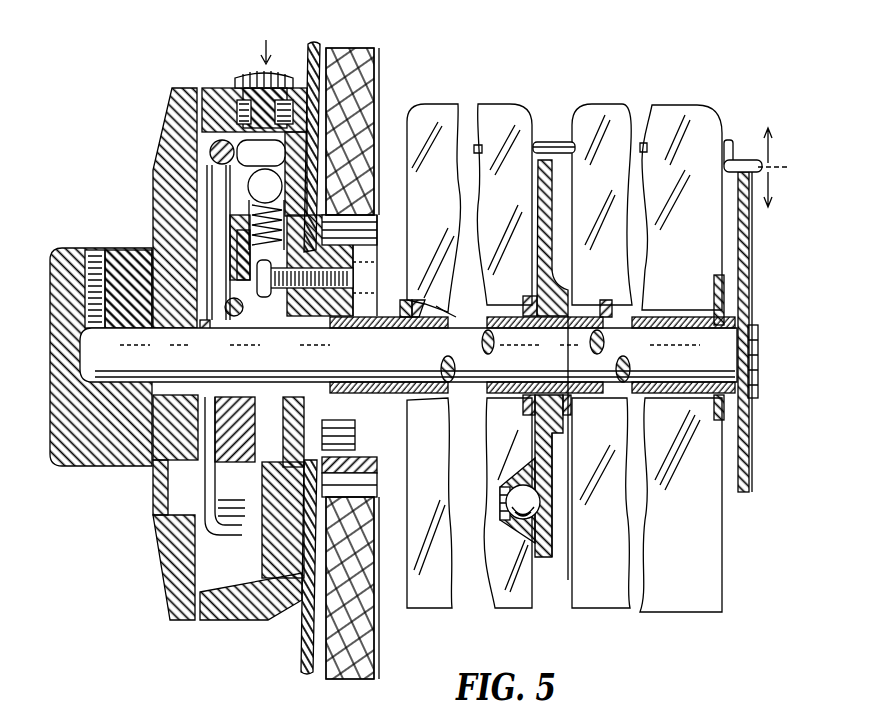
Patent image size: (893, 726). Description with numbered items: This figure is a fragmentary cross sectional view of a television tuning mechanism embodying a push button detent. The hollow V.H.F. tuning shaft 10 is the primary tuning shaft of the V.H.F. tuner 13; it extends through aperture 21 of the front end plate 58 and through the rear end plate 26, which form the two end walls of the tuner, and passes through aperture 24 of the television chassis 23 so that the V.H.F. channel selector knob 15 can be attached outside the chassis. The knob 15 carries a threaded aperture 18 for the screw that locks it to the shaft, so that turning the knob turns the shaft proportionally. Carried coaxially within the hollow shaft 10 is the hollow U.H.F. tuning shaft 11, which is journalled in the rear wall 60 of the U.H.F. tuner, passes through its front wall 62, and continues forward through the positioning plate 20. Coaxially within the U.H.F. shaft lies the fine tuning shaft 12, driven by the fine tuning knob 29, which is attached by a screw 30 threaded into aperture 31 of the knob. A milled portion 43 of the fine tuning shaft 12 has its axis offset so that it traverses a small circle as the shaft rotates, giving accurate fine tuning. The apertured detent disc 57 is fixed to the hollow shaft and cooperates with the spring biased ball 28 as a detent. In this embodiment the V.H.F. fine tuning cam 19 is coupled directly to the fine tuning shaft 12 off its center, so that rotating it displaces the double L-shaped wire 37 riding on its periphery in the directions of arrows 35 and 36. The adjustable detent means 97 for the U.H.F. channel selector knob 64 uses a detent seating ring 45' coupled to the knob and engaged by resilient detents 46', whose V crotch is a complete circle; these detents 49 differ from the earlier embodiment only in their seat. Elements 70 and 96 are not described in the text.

The hollow V.H.F. tuning shaft 10 is at (452, 322).
The hollow U.H.F. tuning shaft 11 is at (590, 314).
The fine tuning shaft 12 is at (444, 343).
The V.H.F. tuner 13 is at (498, 584).
The V.H.F. channel selector knob 15 is at (243, 612).
The threaded aperture 18 is at (356, 279).
The V.H.F. fine tuning cam 19 is at (753, 400).
The positioning plate 20 is at (240, 424).
The aperture 21 is at (419, 313).
The television chassis 23 is at (372, 162).
The aperture 24 is at (363, 458).
The end plate 26 is at (526, 405).
The spring biased ball 28 is at (520, 502).
The fine tuning knob 29 is at (93, 464).
The screw 30 is at (96, 282).
The threaded aperture 31 is at (106, 266).
The arrow 35 is at (772, 130).
The arrow 36 is at (773, 200).
The double L-shaped wire 37 is at (730, 142).
The milled portion of fine tuning shaft 43 is at (207, 366).
The detent seating ring 45' is at (178, 228).
The resilient detents 46' is at (245, 349).
The resilient detents 49 is at (262, 78).
The apertured detent disc 57 is at (547, 560).
The end plate 58 is at (357, 451).
The rear wall of U.H.F. tuner 60 is at (720, 300).
The front wall of U.H.F. tuner 62 is at (571, 405).
The U.H.F. channel selector knob 64 is at (168, 592).
The key 70 is at (204, 350).
The passage 96 is at (240, 455).
The adjustable detent means 97 is at (190, 92).